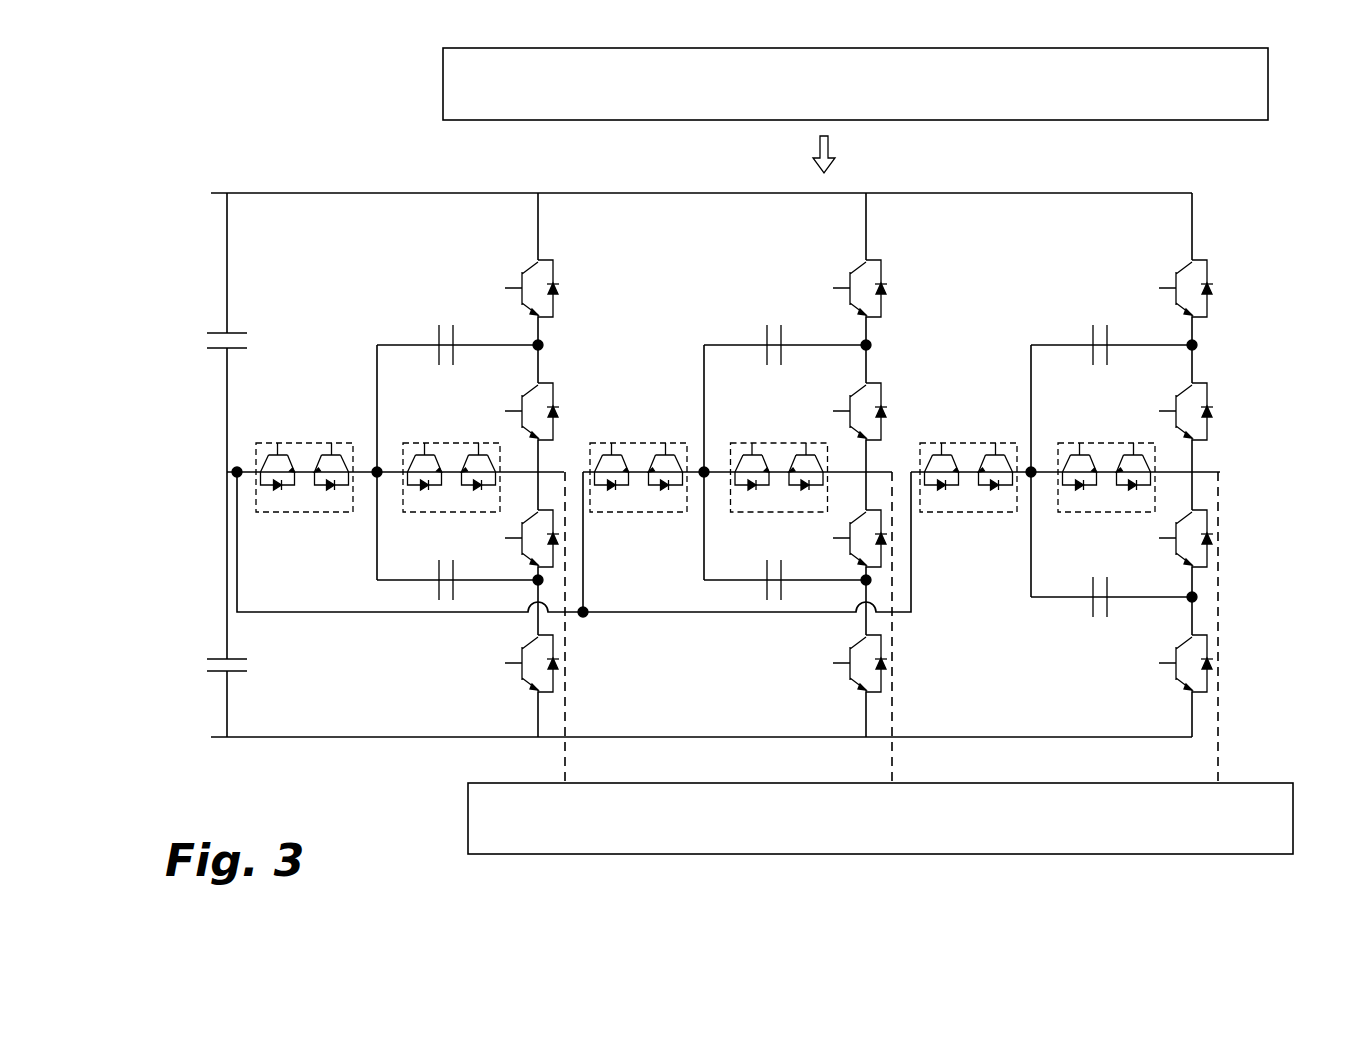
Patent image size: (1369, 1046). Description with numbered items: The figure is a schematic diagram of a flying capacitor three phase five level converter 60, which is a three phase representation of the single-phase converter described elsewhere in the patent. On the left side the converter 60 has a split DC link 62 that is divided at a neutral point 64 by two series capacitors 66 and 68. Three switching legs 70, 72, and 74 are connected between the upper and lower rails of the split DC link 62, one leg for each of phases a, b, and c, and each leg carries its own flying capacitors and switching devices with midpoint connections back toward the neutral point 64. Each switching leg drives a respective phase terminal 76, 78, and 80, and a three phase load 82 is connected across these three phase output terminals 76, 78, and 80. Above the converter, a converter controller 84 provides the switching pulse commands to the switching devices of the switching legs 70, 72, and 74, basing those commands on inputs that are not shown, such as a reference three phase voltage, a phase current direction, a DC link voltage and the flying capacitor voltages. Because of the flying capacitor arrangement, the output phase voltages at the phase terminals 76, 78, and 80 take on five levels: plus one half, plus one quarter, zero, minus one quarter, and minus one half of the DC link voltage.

The flying capacitor three phase five level converter 60 is at (170, 152).
The split DC link 62 is at (227, 222).
The neutral point 64 is at (225, 472).
The capacitor 66 is at (225, 333).
The capacitor 68 is at (225, 659).
The switching leg 70 is at (540, 219).
The switching leg 72 is at (868, 219).
The switching leg 74 is at (1194, 220).
The phase terminal 76 is at (567, 754).
The phase terminal 78 is at (894, 754).
The phase terminal 80 is at (1220, 755).
The three phase load 82 is at (1295, 804).
The converter controller 84 is at (443, 85).